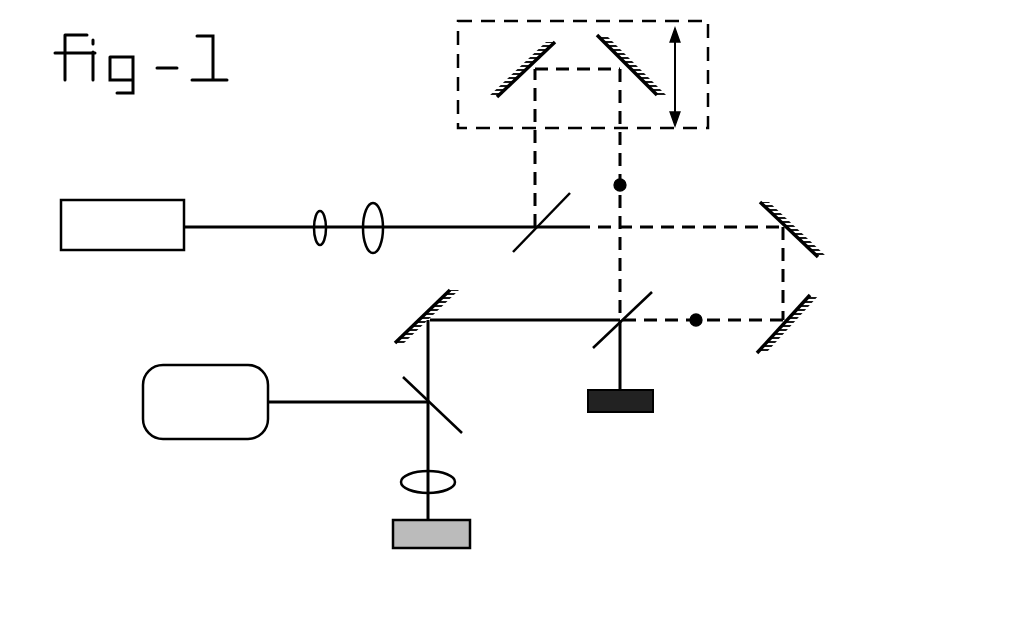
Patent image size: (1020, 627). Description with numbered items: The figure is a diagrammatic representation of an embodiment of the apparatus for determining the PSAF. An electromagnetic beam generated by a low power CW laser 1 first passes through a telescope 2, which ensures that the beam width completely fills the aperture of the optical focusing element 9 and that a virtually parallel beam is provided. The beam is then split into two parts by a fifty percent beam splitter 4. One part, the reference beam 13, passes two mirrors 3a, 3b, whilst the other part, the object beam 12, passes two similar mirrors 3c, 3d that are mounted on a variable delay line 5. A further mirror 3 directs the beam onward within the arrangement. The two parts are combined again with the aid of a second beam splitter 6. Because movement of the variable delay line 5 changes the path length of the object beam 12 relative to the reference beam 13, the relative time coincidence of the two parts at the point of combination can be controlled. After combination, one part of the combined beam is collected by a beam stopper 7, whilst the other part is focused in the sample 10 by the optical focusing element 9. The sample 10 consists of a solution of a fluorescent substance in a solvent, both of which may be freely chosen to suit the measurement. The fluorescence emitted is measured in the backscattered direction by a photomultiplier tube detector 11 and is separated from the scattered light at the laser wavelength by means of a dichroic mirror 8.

The low power CW laser 1 is at (122, 225).
The telescope 2 is at (348, 214).
The mirror 3 is at (427, 313).
The mirror 3a is at (793, 227).
The mirror 3b is at (789, 328).
The mirror 3c is at (521, 65).
The mirror 3d is at (631, 65).
The 50% beam splitter 4 is at (540, 237).
The variable delay line 5 is at (686, 77).
The second beam splitter 6 is at (631, 312).
The beam stopper 7 is at (635, 405).
The dichroic mirror 8 is at (442, 409).
The optical focusing element 9 is at (442, 485).
The sample 10 is at (451, 536).
The photomultiplier tube detector 11 is at (205, 402).
The object beam 12 is at (620, 185).
The reference beam 13 is at (696, 320).